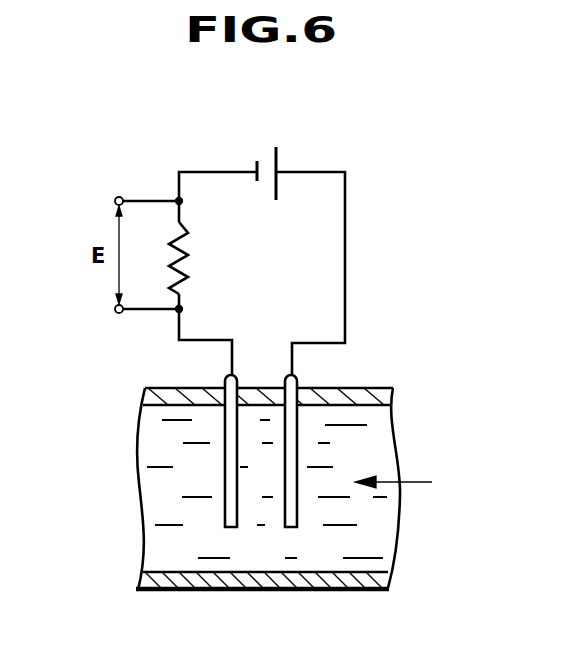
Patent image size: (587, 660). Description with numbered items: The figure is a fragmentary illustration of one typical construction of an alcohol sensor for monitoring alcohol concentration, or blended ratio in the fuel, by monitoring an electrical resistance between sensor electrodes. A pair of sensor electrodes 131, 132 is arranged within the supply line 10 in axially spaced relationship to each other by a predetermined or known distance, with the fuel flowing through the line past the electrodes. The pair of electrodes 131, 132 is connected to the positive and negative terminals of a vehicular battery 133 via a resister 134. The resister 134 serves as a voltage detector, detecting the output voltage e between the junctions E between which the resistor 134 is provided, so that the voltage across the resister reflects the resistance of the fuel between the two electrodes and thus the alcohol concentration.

The supply line 10 is at (373, 592).
The sensor electrode 131 is at (222, 510).
The sensor electrode 132 is at (297, 505).
The vehicular battery 133 is at (278, 160).
The resister 134 is at (191, 250).